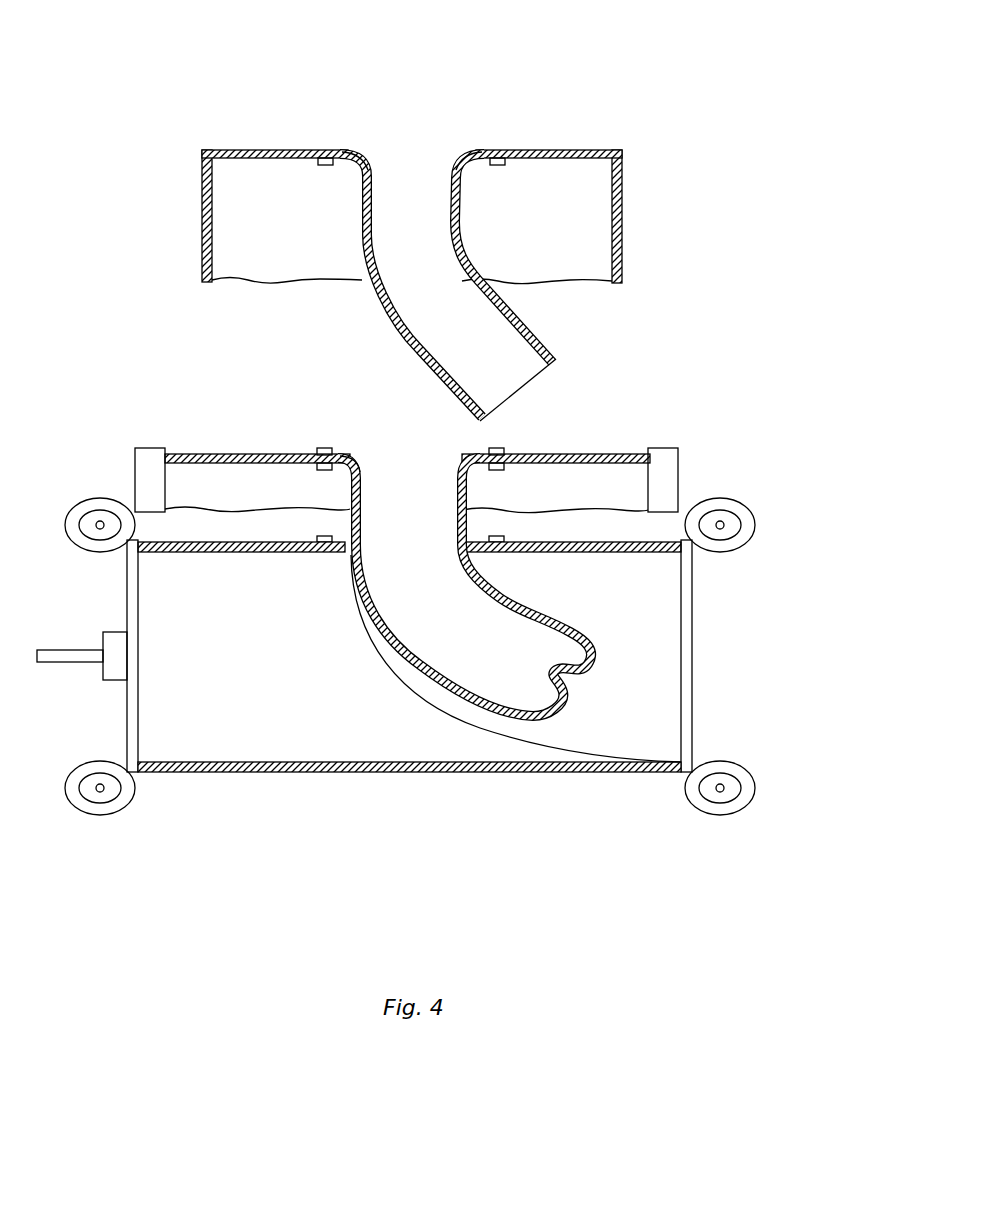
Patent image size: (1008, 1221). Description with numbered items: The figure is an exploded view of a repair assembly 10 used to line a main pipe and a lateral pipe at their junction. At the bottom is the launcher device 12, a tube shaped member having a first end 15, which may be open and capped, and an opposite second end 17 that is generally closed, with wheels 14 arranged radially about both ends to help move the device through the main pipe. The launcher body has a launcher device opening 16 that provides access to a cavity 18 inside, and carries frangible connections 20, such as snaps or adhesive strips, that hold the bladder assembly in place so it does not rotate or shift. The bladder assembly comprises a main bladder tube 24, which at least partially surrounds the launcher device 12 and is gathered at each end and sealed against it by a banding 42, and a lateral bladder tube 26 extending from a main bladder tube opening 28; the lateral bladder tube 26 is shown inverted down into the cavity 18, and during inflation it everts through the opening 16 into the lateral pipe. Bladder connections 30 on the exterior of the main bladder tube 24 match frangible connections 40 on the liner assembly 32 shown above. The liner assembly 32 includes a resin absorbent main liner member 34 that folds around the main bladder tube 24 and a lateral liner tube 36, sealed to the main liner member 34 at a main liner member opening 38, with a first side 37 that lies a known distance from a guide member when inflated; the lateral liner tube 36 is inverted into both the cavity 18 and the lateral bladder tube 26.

The repair assembly 10 is at (632, 74).
The launcher device 12 is at (410, 617).
The wheels 14 is at (66, 516).
The first end 15 is at (126, 615).
The launcher device opening 16 is at (349, 553).
The second end 17 is at (693, 660).
The cavity 18 is at (408, 675).
The frangible connections 20 is at (322, 537).
The main bladder tube 24 is at (576, 455).
The lateral bladder tube 26 is at (406, 633).
The main bladder tube opening 28 is at (363, 460).
The bladder connections 30 is at (318, 452).
The liner assembly 32 is at (452, 272).
The main liner member 34 is at (597, 150).
The lateral liner tube 36 is at (418, 346).
The first side 37 is at (366, 156).
The main liner member opening 38 is at (474, 155).
The frangible connections 40 is at (320, 166).
The banding 42 is at (150, 449).